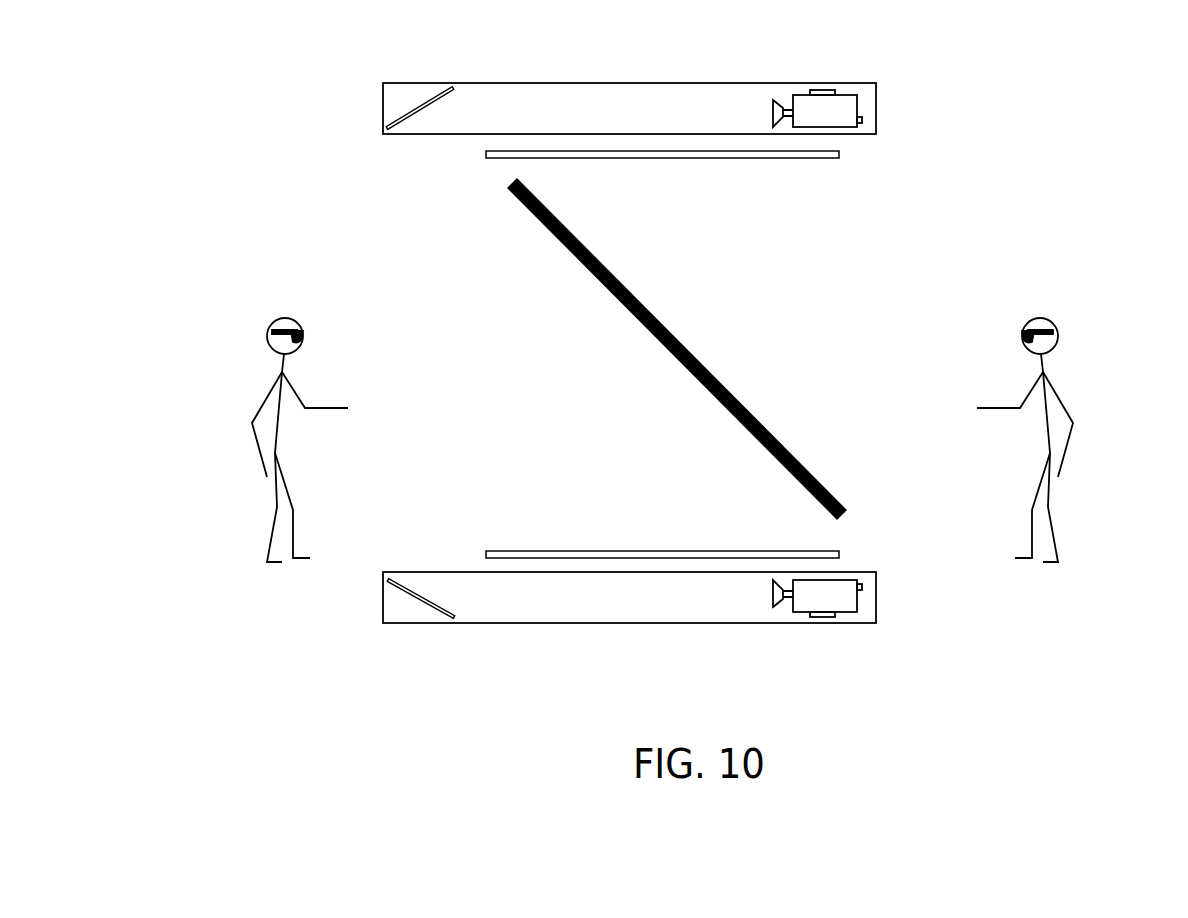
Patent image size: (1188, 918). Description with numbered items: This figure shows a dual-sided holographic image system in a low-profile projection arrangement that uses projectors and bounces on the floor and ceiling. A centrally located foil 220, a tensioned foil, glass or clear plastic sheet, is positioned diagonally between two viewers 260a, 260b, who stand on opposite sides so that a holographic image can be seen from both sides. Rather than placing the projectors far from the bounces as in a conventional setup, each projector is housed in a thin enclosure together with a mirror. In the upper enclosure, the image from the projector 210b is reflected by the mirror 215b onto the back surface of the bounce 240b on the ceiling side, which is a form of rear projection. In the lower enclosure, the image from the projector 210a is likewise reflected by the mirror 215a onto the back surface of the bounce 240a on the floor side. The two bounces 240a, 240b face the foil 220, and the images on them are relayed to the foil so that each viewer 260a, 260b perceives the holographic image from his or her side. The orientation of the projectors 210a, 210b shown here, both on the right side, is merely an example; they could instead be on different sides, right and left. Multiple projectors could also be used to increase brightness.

The mirror 215b is at (431, 92).
The projector 210b is at (855, 86).
The bounce 240b is at (741, 166).
The foil 220 is at (685, 325).
The bounce 240a is at (742, 542).
The mirror 215a is at (431, 614).
The projector 210a is at (855, 621).
The viewer 260a is at (245, 379).
The viewer 260b is at (1080, 379).